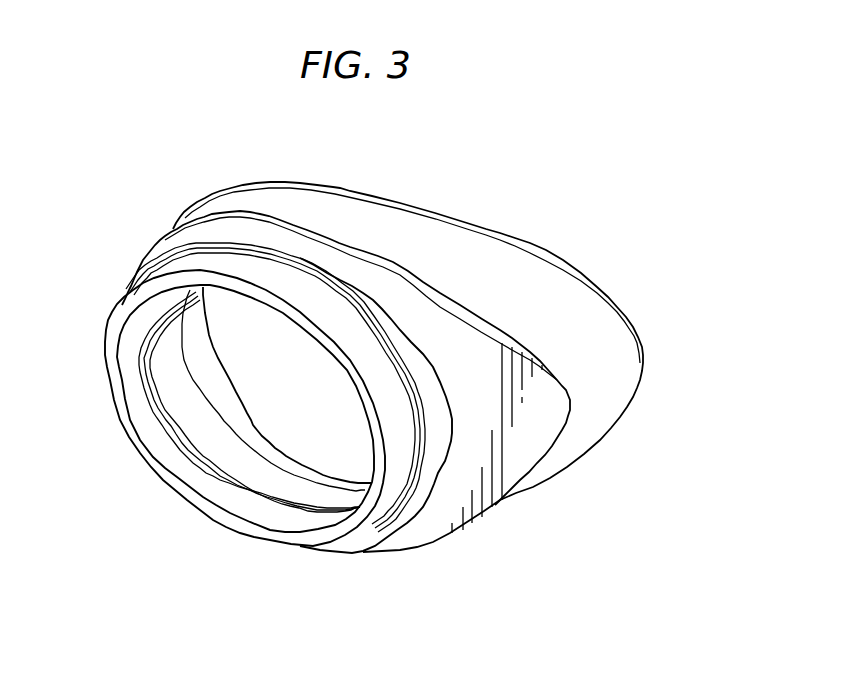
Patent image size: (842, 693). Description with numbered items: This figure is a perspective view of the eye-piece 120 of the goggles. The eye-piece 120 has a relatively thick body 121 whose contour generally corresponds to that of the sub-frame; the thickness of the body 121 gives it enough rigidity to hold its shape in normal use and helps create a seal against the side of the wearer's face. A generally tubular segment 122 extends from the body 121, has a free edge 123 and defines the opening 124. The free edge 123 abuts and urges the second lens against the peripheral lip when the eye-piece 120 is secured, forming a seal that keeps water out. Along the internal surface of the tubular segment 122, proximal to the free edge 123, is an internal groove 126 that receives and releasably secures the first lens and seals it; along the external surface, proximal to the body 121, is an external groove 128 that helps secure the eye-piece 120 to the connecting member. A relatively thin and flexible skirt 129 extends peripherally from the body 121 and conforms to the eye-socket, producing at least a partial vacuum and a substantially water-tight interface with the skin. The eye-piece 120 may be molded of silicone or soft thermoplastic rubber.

The eye-piece 120 is at (370, 124).
The body 121 is at (538, 425).
The tubular segment 122 is at (396, 463).
The free edge 123 is at (116, 385).
The opening 124 is at (313, 433).
The internal groove 126 is at (173, 443).
The external groove 128 is at (423, 447).
The skirt 129 is at (603, 383).